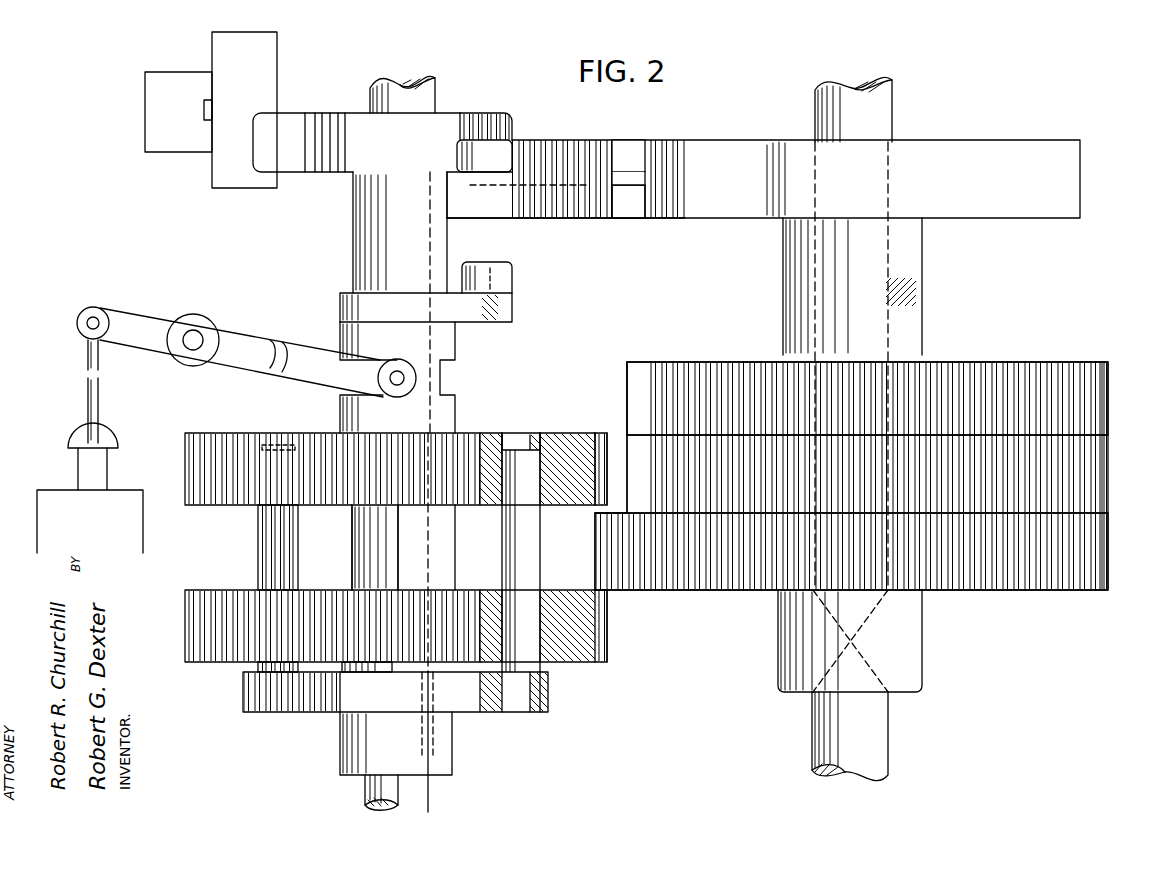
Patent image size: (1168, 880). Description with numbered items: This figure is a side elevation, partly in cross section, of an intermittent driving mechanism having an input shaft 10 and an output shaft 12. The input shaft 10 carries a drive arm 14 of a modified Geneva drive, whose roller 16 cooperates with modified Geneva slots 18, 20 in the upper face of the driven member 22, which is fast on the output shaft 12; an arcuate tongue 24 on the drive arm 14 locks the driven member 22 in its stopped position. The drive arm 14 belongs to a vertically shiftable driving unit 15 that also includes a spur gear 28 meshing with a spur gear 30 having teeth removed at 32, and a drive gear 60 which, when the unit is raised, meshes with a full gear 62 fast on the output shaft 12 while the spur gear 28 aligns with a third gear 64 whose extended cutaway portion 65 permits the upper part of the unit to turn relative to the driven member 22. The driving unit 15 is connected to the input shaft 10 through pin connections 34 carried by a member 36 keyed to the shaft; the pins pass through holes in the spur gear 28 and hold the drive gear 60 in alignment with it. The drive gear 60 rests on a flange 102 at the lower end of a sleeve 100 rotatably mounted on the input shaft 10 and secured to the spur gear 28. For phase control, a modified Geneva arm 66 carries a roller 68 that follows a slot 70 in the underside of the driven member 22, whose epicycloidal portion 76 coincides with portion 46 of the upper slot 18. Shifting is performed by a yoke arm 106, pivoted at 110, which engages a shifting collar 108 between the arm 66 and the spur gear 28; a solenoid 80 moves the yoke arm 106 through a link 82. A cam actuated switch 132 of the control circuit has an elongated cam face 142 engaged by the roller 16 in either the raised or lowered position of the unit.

The input shaft 10 is at (372, 92).
The output shaft 12 is at (892, 108).
The drive arm 14 is at (460, 113).
The driving unit 15 is at (266, 266).
The roller 16 is at (495, 152).
The modified Geneva slot 18 is at (576, 118).
The modified Geneva slot 20 is at (595, 145).
The driven member 22 is at (1008, 142).
The arcuate tongue 24 is at (278, 162).
The spur gear 28 is at (563, 436).
The spur gear 30 is at (1108, 478).
The removed teeth portion 32 is at (632, 460).
The pin connections 34 is at (258, 536).
The keyed member 36 is at (548, 708).
The slot portion 46 is at (625, 150).
The drive gear 60 is at (605, 655).
The full gear 62 is at (1108, 550).
The third gear 64 is at (1108, 397).
The cutaway portion 65 is at (636, 381).
The modified Geneva arm 66 is at (512, 318).
The roller 68 is at (513, 278).
The slot 70 is at (512, 217).
The slot portion 76 is at (625, 213).
The solenoid 80 is at (48, 492).
The link 82 is at (86, 392).
The sleeve 100 is at (352, 558).
The flange 102 is at (340, 672).
The yoke arm 106 is at (305, 345).
The shifting collar 108 is at (440, 380).
The pivot 110 is at (193, 335).
The cam actuated switch 132 is at (147, 118).
The cam face 142 is at (212, 47).